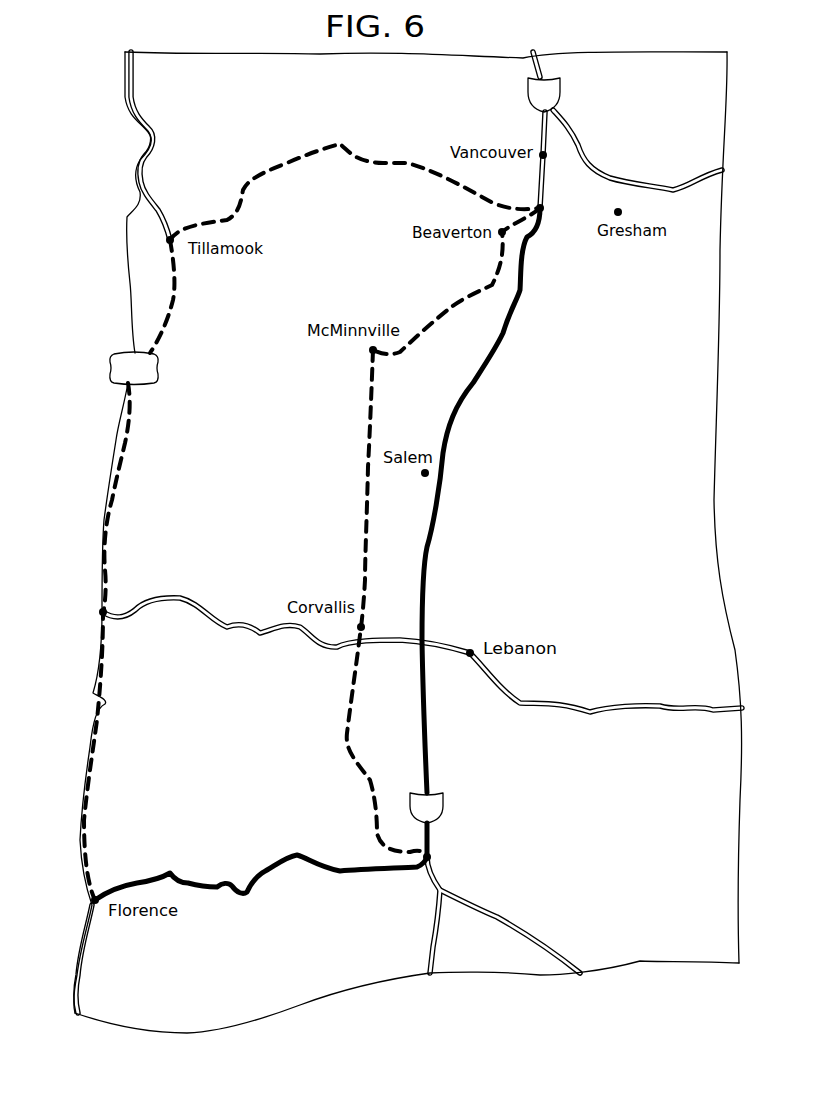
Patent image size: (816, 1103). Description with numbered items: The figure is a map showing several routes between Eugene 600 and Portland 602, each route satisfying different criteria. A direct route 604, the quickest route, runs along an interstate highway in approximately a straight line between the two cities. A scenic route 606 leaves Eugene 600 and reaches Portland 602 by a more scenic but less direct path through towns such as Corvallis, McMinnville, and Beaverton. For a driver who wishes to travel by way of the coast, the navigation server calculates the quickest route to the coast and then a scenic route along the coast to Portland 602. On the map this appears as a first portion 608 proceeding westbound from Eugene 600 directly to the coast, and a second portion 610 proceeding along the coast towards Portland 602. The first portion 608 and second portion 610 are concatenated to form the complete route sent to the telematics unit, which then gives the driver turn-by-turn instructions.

The Eugene 600 is at (443, 850).
The Portland 602 is at (552, 215).
The direct route 604 is at (440, 527).
The scenic route 606 is at (367, 498).
The first portion 608 is at (215, 883).
The second portion 610 is at (125, 447).